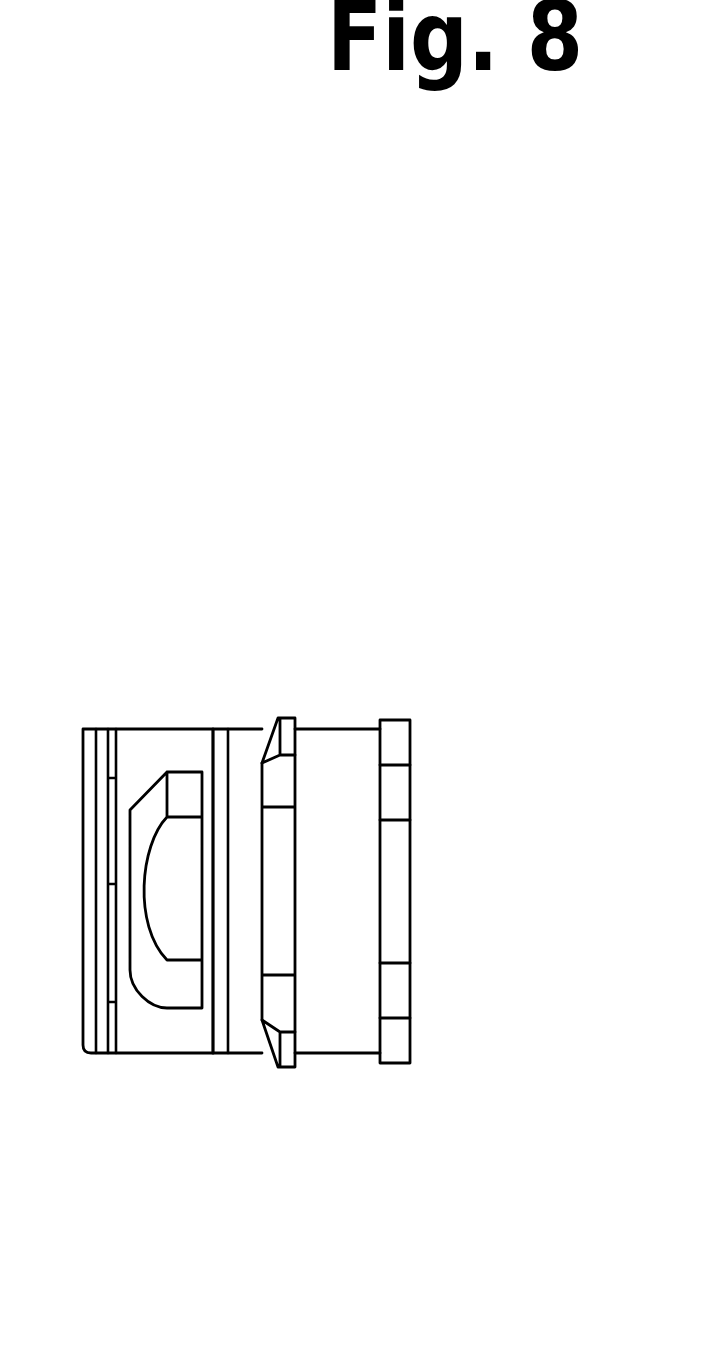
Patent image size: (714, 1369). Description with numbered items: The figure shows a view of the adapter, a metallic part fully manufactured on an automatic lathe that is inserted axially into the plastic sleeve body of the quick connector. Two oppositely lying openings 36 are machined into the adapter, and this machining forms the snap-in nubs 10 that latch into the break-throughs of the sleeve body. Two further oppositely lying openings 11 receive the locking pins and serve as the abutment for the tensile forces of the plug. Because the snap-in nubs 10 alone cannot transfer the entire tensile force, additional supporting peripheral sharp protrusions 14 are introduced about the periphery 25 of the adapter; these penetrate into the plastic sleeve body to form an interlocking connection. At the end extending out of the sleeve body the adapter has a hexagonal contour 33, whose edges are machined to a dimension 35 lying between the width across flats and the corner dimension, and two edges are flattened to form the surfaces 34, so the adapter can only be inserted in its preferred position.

The supporting peripheral sharp protrusions 14 is at (196, 705).
The snap-in nubs 10 is at (276, 695).
The periphery 25 is at (352, 700).
The surfaces 34 is at (400, 695).
The hexagonal contour 33 is at (430, 747).
The dimension 35 is at (430, 791).
The openings 11 is at (179, 945).
The openings 36 is at (310, 945).